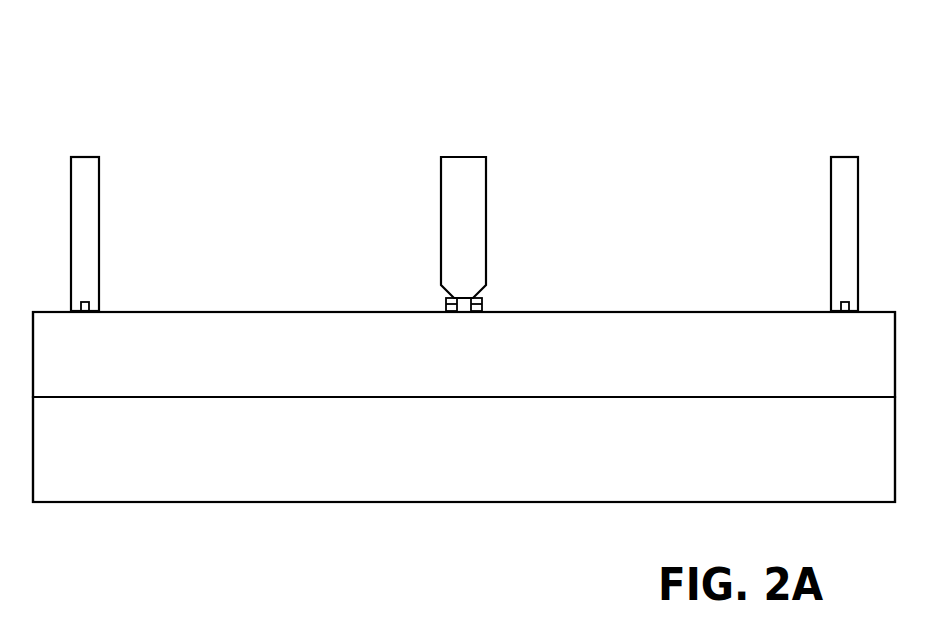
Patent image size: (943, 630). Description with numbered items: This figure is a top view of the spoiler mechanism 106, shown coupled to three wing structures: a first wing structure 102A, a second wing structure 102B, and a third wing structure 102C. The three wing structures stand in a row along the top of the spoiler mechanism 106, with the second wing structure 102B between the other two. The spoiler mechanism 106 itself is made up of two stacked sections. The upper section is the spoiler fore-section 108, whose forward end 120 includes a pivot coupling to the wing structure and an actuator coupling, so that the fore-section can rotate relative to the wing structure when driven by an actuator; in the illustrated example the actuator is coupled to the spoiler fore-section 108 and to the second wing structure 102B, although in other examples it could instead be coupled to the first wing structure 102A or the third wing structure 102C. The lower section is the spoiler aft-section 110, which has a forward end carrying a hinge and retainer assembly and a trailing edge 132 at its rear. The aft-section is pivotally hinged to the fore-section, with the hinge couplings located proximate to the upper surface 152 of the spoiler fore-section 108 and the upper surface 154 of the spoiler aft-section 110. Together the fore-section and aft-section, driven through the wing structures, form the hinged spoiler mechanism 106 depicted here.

The spoiler mechanism 106 is at (270, 64).
The first wing structure 102A is at (86, 157).
The second wing structure 102B is at (441, 165).
The third wing structure 102C is at (840, 157).
The forward end 120 is at (333, 291).
The spoiler fore-section 108 is at (622, 330).
The upper surface of the spoiler fore-section 152 is at (209, 365).
The upper surface of the spoiler aft-section 154 is at (209, 461).
The spoiler aft-section 110 is at (518, 484).
The trailing edge 132 is at (332, 522).